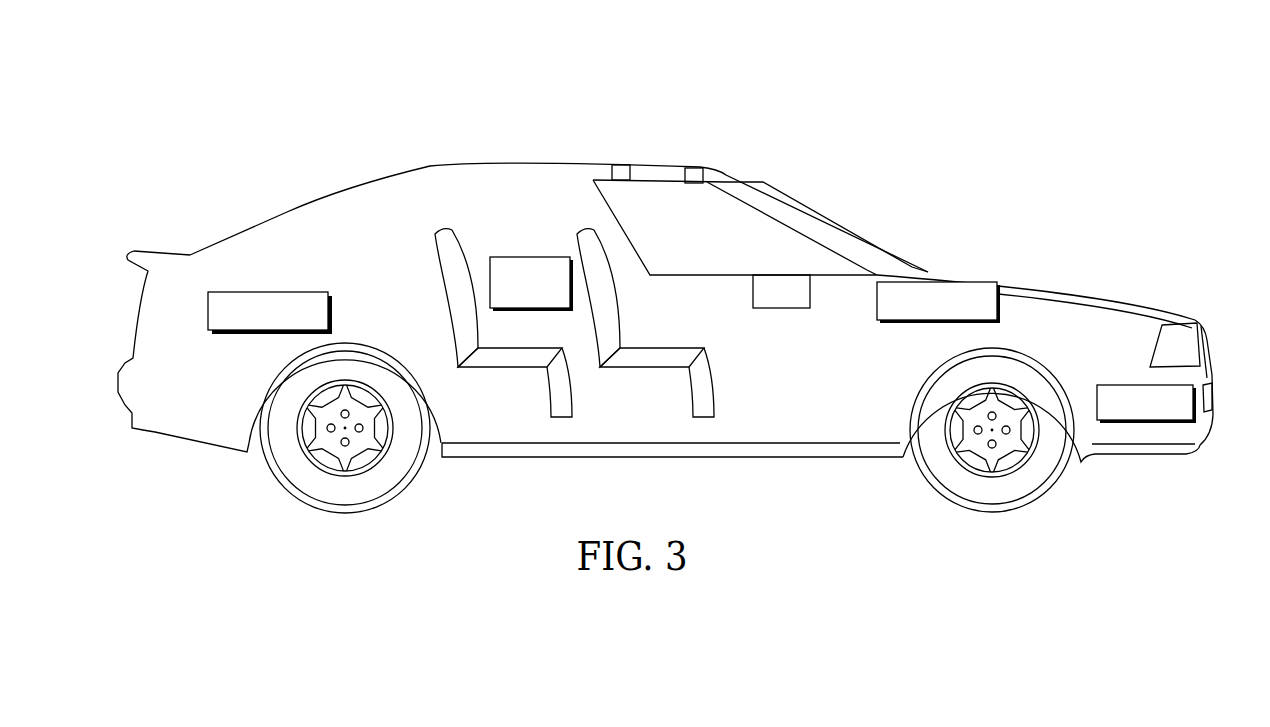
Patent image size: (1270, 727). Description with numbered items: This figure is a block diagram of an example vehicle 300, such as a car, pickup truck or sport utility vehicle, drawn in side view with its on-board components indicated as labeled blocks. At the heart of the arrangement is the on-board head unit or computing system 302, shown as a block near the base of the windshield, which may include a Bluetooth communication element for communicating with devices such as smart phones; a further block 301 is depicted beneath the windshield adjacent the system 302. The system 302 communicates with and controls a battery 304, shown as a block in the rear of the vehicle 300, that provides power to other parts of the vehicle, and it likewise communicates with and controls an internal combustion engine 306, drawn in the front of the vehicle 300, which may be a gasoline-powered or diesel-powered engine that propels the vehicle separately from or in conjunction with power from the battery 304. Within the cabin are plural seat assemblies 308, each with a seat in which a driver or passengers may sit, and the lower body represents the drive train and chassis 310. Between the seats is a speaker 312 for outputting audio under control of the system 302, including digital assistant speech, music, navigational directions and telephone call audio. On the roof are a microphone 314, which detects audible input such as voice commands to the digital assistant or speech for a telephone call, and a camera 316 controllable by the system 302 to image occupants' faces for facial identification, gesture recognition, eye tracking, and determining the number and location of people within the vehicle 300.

The vehicle 300 is at (950, 88).
The control unit 301 is at (782, 308).
The computing system 302 is at (940, 282).
The battery 304 is at (268, 292).
The internal combustion engine 306 is at (1128, 385).
The seat assemblies 308 is at (440, 230).
The drive train and chassis 310 is at (833, 443).
The speaker 312 is at (531, 284).
The microphone 314 is at (692, 168).
The camera 316 is at (620, 165).